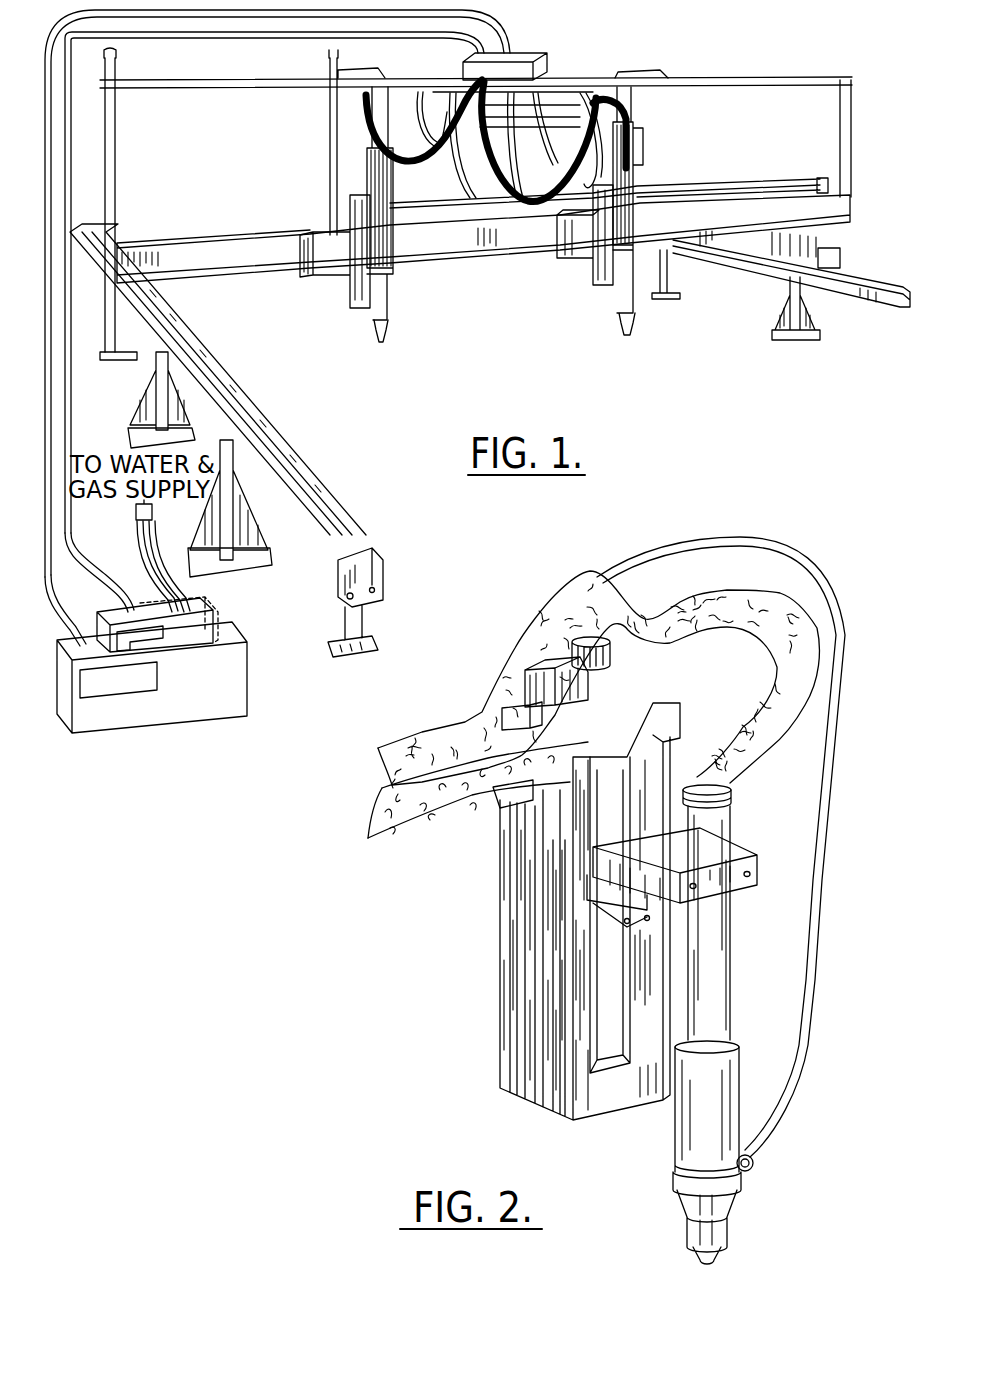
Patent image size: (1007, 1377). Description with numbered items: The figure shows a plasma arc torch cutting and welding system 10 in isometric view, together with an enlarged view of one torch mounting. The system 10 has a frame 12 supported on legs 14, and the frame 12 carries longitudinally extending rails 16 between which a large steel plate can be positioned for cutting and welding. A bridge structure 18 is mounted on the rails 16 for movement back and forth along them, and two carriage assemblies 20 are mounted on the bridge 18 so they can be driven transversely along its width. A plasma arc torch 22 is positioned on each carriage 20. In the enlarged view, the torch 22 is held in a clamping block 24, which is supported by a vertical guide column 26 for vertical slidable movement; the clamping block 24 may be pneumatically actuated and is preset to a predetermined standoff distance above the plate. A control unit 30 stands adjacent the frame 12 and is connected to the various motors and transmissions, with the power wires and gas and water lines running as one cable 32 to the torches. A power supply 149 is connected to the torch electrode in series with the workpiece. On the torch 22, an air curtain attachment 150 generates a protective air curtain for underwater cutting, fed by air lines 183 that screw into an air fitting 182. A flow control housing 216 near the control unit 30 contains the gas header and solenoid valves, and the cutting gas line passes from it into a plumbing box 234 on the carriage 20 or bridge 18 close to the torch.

In FIG. 1, the cutting and welding system 10 is at (668, 42).
In FIG. 1, the frame 12 is at (109, 279).
In FIG. 1, the legs 14 is at (116, 352).
In FIG. 1, the rails 16 is at (250, 424).
In FIG. 1, the bridge structure 18 is at (230, 243).
In FIG. 1, the carriage assemblies 20 is at (333, 268).
In FIG. 1, the plasma arc torch 22 is at (390, 336).
In FIG. 2, the plasma arc torch 22 is at (738, 944).
In FIG. 2, the clamping block 24 is at (738, 858).
In FIG. 2, the vertical guide column 26 is at (655, 722).
In FIG. 1, the control unit 30 is at (218, 636).
In FIG. 2, the cable 32 is at (683, 628).
In FIG. 1, the power supply 149 is at (240, 677).
In FIG. 2, the air curtain attachment 150 is at (668, 1146).
In FIG. 2, the air fitting 182 is at (751, 1172).
In FIG. 2, the air lines 183 is at (836, 741).
In FIG. 1, the flow control housing 216 is at (205, 612).
In FIG. 1, the plumbing box 234 is at (540, 55).